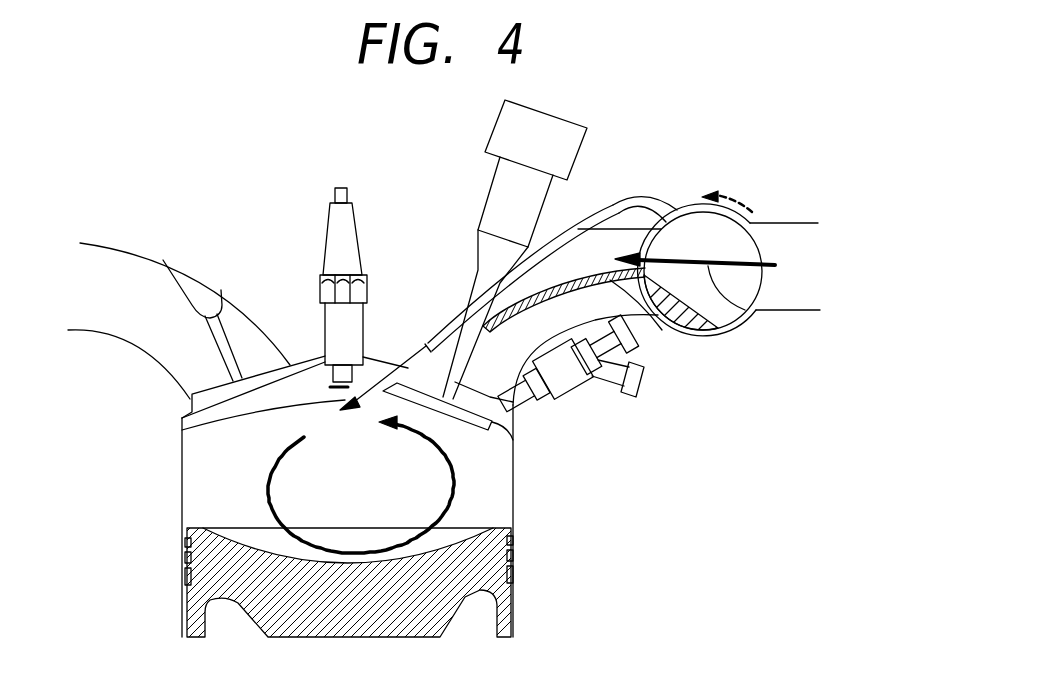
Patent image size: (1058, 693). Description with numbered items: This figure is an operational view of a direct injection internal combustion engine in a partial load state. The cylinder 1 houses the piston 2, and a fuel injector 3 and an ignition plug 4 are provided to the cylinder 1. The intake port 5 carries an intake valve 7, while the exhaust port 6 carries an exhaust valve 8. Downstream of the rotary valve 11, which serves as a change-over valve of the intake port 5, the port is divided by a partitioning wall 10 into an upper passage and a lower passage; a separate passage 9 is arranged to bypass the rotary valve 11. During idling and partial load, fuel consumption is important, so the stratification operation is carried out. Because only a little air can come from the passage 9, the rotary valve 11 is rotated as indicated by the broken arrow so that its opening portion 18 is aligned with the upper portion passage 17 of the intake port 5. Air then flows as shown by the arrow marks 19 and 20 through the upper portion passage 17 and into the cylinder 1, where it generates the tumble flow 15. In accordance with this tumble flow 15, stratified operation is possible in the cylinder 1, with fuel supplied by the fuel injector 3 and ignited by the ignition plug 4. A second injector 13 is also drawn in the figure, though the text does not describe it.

The cylinder 1 is at (182, 472).
The piston 2 is at (505, 592).
The fuel injector 3 is at (575, 395).
The ignition plug 4 is at (320, 281).
The intake port 5 is at (452, 302).
The exhaust port 6 is at (140, 247).
The intake valve 7 is at (513, 440).
The exhaust valve 8 is at (190, 390).
The passage 9 is at (632, 197).
The partitioning wall 10 is at (662, 330).
The rotary valve 11 is at (762, 240).
The second injector 13 is at (498, 127).
The tumble flow 15 is at (268, 483).
The upper portion passage 17 is at (610, 250).
The opening portion 18 is at (680, 248).
The arrow mark 19 is at (752, 312).
The arrow mark 20 is at (182, 430).